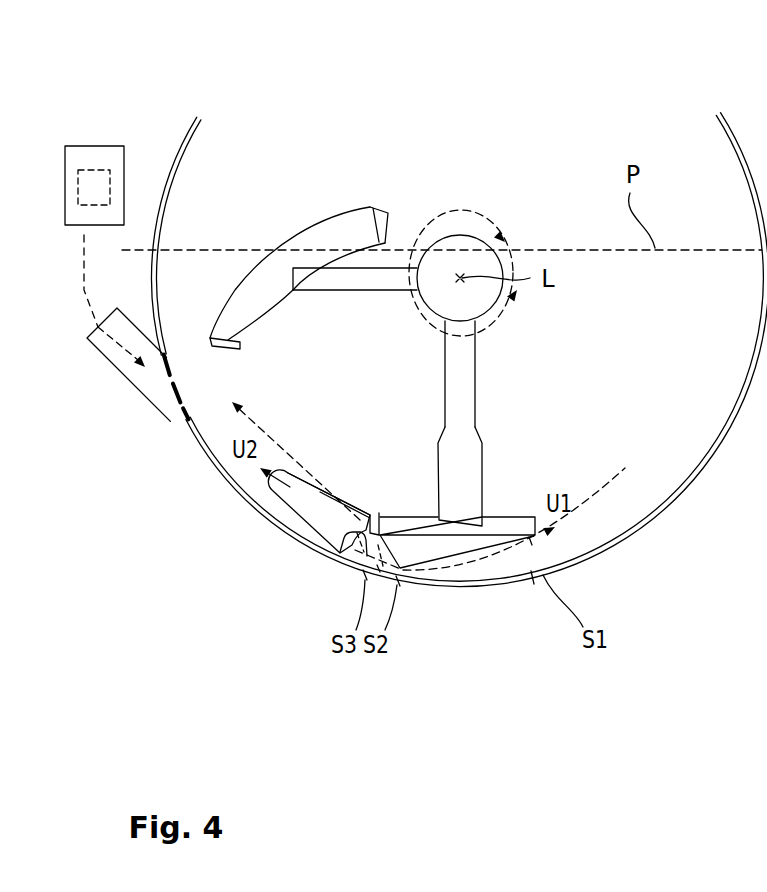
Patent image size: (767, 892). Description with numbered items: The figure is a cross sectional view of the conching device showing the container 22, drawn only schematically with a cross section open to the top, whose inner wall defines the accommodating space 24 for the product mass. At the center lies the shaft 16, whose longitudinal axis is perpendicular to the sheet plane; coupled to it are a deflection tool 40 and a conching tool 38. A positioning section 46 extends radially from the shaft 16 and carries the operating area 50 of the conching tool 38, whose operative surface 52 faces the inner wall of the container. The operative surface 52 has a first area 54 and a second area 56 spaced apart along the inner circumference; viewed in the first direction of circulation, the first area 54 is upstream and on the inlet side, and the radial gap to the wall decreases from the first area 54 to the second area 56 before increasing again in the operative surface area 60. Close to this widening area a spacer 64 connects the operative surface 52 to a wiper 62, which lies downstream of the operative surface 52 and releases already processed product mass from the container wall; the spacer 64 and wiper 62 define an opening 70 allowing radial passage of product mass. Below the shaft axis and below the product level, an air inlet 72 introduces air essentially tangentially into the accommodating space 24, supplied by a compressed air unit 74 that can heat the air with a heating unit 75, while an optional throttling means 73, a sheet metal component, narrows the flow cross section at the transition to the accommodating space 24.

The shaft 16 is at (503, 262).
The container 22 is at (202, 125).
The accommodating space 24 is at (533, 203).
The conching tool 38 is at (437, 357).
The deflection tool 40 is at (330, 248).
The positioning section 46 is at (457, 395).
The operating area 50 is at (399, 522).
The operative surface 52 is at (443, 562).
The first area 54 is at (532, 590).
The second area 56 is at (403, 593).
The operative surface area 60 is at (357, 572).
The wiper 62 is at (308, 512).
The spacer 64 is at (318, 437).
The opening 70 is at (346, 503).
The air inlet 72 is at (158, 397).
The throttling means 73 is at (172, 423).
The compressed air unit 74 is at (72, 144).
The heating unit 75 is at (103, 168).